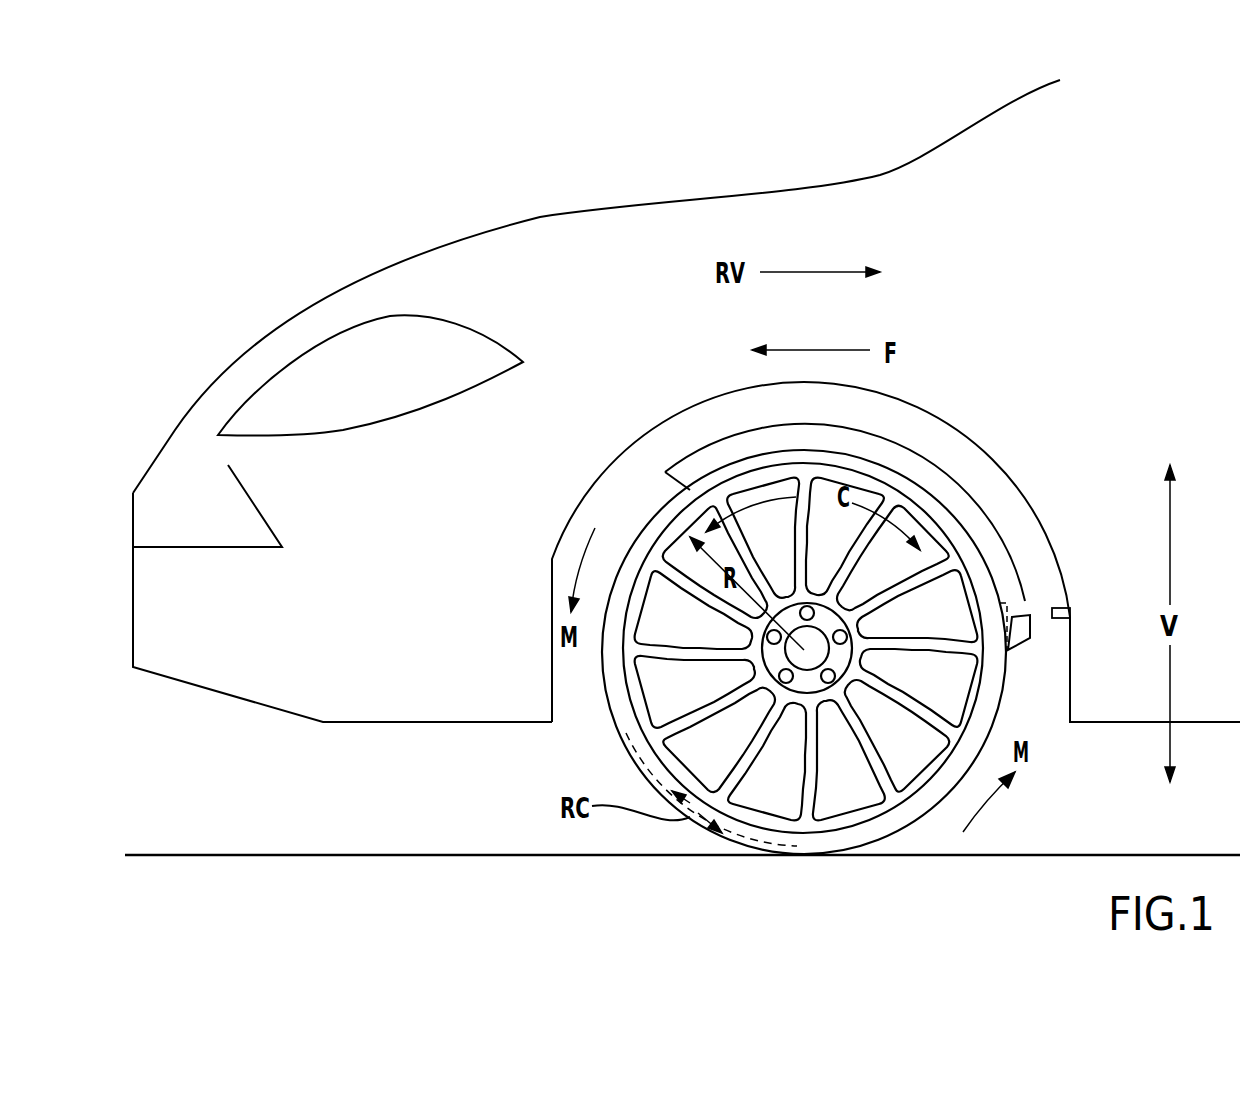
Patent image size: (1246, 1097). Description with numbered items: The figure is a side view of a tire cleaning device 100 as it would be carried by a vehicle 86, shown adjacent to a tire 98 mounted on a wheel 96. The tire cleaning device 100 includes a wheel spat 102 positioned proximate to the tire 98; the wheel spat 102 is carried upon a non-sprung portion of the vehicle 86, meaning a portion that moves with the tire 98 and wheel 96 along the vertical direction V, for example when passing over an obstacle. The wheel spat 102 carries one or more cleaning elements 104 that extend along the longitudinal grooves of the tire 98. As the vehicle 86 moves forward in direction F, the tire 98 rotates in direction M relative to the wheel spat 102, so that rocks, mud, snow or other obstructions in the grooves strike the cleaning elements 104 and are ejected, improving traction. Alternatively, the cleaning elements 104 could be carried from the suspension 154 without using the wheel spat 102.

The vehicle 86 is at (457, 245).
The wheel 96 is at (990, 662).
The tire 98 is at (1003, 688).
The tire cleaning device 100 is at (647, 470).
The wheel spat 102 is at (995, 538).
The cleaning element 104 is at (1020, 618).
The suspension 154 is at (1068, 607).